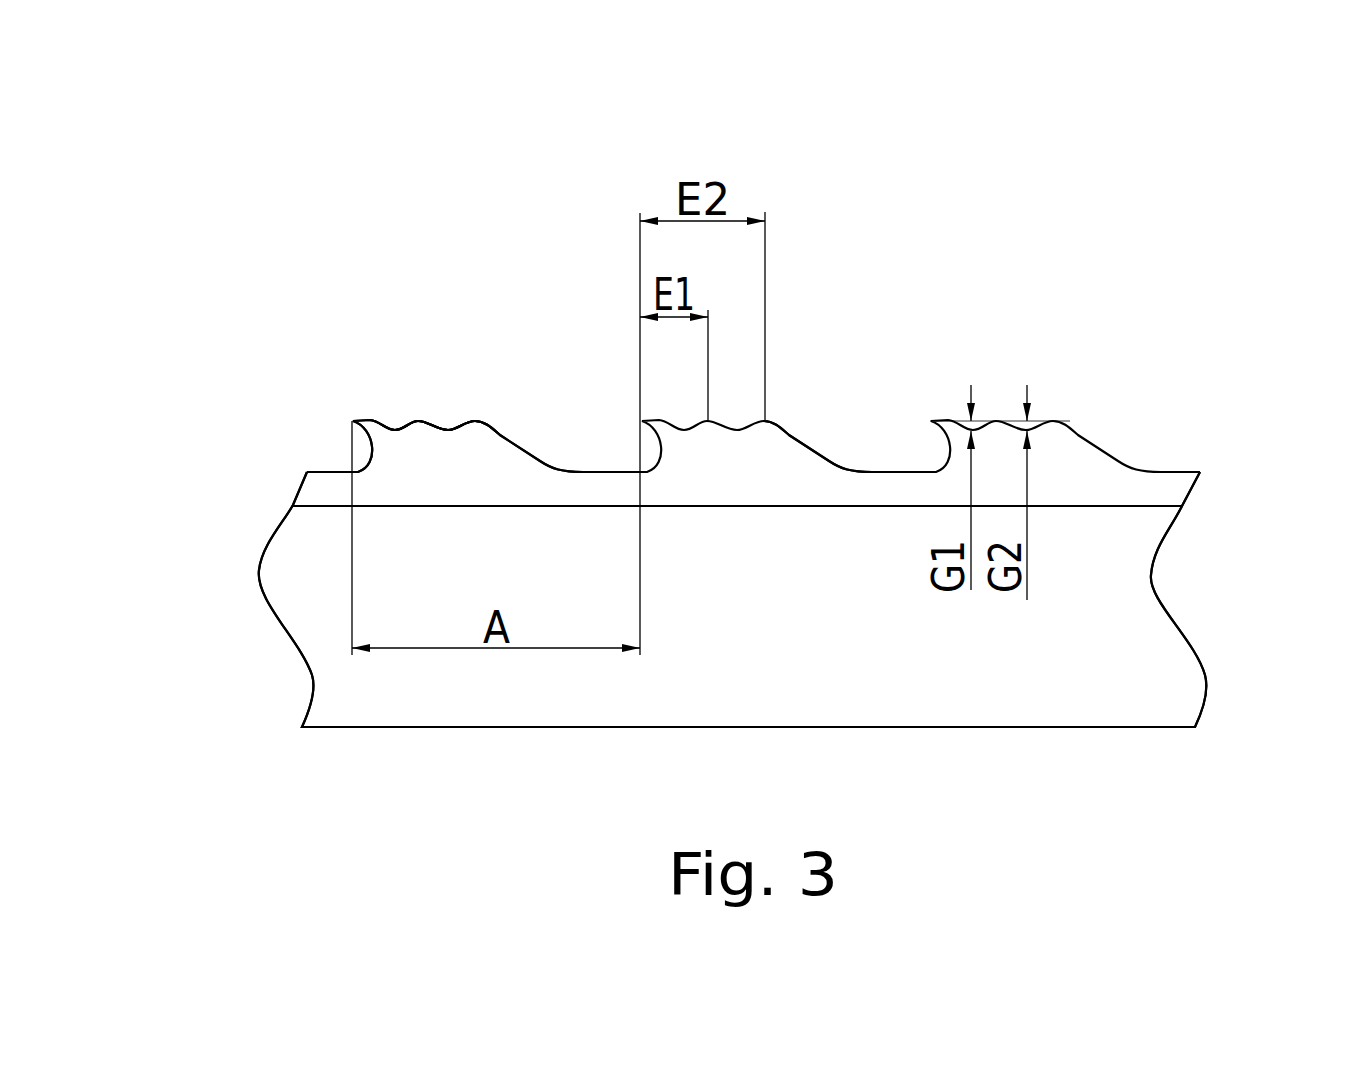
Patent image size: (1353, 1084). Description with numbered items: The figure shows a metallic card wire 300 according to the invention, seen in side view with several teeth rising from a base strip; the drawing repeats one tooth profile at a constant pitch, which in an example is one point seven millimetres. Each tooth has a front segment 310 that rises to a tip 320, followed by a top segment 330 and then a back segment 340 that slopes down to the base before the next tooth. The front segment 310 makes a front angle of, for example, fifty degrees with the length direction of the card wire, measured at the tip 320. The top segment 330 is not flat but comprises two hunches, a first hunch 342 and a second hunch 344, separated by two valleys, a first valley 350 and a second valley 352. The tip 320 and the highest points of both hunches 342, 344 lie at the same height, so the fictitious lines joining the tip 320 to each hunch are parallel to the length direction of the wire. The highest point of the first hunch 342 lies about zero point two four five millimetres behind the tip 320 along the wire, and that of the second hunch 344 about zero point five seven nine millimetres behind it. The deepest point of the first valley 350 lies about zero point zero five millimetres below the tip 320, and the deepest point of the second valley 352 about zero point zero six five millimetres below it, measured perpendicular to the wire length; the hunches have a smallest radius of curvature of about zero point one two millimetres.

The metallic card wire 300 is at (1202, 182).
The front segment 310 is at (342, 443).
The tip 320 is at (352, 421).
The top segment 330 is at (400, 413).
The back segment 340 is at (826, 441).
The first hunch 342 is at (421, 421).
The second hunch 344 is at (476, 421).
The first valley 350 is at (392, 430).
The second valley 352 is at (449, 430).